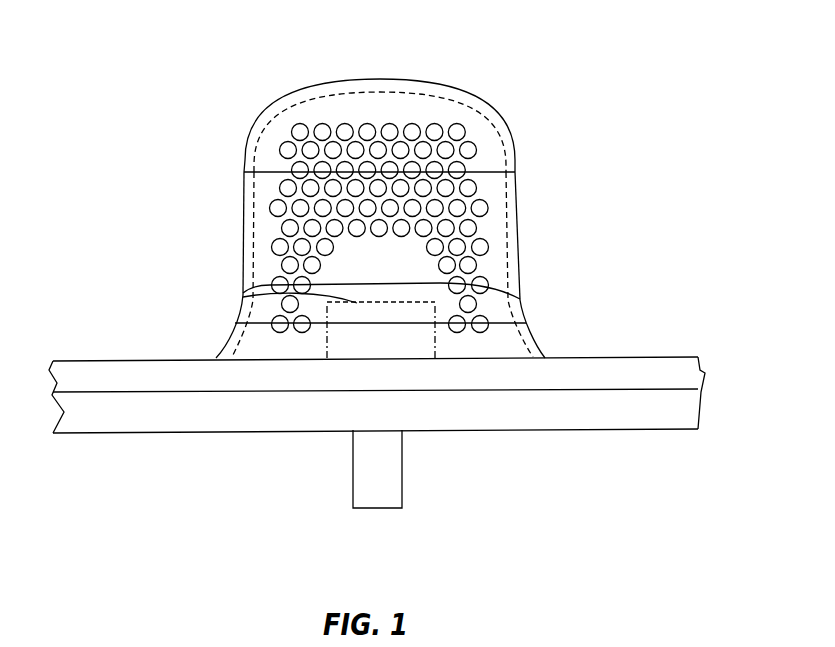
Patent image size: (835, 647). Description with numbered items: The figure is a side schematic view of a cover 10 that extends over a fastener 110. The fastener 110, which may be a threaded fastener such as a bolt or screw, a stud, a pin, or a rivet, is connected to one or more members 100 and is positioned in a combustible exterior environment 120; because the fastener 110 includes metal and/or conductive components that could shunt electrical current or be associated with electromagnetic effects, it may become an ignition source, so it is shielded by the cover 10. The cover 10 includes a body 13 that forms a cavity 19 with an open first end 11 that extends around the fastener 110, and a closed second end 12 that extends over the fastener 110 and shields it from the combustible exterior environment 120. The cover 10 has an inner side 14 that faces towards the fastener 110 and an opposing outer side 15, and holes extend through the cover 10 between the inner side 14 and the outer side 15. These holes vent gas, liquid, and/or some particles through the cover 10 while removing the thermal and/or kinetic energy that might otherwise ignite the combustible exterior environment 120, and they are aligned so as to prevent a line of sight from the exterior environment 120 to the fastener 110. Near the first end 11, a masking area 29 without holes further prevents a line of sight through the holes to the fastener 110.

The cover 10 is at (524, 93).
The open first end 11 is at (545, 357).
The closed second end 12 is at (379, 79).
The body 13 is at (516, 213).
The inner side 14 is at (257, 203).
The outer side 15 is at (241, 242).
The cavity 19 is at (393, 260).
The masking area 29 is at (400, 296).
The member 100 is at (650, 377).
The fastener 110 is at (378, 475).
The combustible exterior environment 120 is at (188, 78).